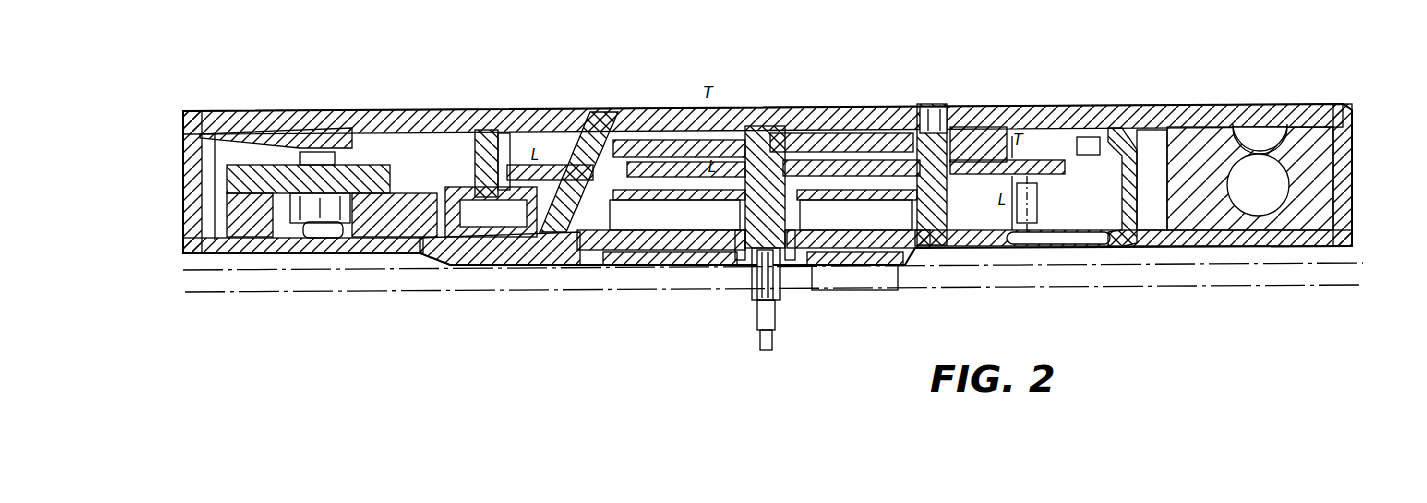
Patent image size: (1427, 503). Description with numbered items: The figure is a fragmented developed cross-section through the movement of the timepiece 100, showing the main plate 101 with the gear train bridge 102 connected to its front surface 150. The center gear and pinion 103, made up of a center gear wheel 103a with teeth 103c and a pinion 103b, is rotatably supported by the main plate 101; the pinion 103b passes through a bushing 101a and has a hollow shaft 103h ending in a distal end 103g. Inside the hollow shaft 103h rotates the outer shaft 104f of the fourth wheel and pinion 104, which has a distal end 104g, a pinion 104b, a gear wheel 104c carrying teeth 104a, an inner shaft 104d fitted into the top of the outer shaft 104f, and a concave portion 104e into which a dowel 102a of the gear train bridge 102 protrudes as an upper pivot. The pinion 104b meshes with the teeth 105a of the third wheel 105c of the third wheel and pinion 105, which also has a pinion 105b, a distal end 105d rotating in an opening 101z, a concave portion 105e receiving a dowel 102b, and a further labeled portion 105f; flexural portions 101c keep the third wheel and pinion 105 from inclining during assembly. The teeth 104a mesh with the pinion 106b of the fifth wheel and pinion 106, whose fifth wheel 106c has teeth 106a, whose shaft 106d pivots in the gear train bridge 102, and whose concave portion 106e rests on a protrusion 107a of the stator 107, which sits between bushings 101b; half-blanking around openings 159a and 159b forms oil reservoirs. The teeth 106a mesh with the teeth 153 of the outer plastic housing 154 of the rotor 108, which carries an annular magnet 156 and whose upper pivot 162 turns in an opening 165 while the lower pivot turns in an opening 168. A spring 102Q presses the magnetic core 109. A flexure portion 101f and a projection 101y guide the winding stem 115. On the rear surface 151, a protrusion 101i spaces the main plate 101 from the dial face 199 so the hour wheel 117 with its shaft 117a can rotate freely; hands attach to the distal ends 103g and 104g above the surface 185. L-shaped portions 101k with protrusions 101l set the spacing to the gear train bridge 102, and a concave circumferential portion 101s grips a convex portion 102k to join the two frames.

The timepiece 100 is at (265, 355).
The main plate 101 is at (370, 265).
The bushing 101a is at (797, 270).
The bushings 101b is at (300, 265).
The flexural portions 101c is at (1040, 210).
The flexure portion 101f is at (1330, 200).
The protrusion 101i is at (575, 265).
The L-shaped portions 101k is at (1158, 108).
The protrusion 101l is at (1098, 108).
The concave circumferential portion 101s is at (1250, 125).
The projection 101y is at (1262, 250).
The opening 101z is at (922, 265).
The gear train bridge 102 is at (688, 107).
The spring 102Q is at (320, 145).
The dowel 102a is at (770, 108).
The dowel 102b is at (938, 108).
The convex portion 102k is at (1296, 106).
The center gear and pinion 103 is at (740, 270).
The center gear wheel 103a is at (661, 227).
The pinion 103b is at (718, 266).
The teeth 103c is at (858, 225).
The distal end 103g is at (770, 325).
The hollow shaft 103h is at (790, 320).
The fourth wheel and pinion 104 is at (815, 108).
The teeth 104a is at (893, 108).
The pinion 104b is at (738, 108).
The gear wheel 104c is at (862, 108).
The inner shaft 104d is at (857, 210).
The concave portion 104e is at (797, 108).
The outer shaft 104f is at (795, 290).
The distal end 104g is at (790, 340).
The third wheel and pinion 105 is at (975, 108).
The teeth 105a is at (1060, 176).
The pinion 105b is at (955, 262).
The third wheel 105c is at (1066, 144).
The distal end 105d is at (935, 262).
The concave portion 105e is at (855, 271).
The seal portion 105f is at (1000, 252).
The fifth wheel and pinion 106 is at (650, 108).
The teeth 106a is at (670, 269).
The pinion 106b is at (545, 108).
The fifth wheel 106c is at (525, 110).
The shaft 106d is at (595, 110).
The concave portion 106e is at (626, 108).
The stator 107 is at (395, 265).
The protrusion 107a is at (677, 210).
The rotor 108 is at (450, 110).
The magnetic core 109 is at (283, 172).
The winding stem 115 is at (1278, 180).
The hour wheel 117 is at (686, 263).
The shaft 117a is at (745, 300).
The front surface 150 is at (625, 266).
The rear surface 151 is at (525, 265).
The teeth 153 is at (475, 160).
The outer plastic housing 154 is at (455, 265).
The annular magnet 156 is at (452, 190).
The opening 159a is at (600, 108).
The opening 159b is at (760, 108).
The upper pivot 162 is at (478, 118).
The opening 165 is at (497, 107).
The opening 168 is at (1320, 250).
The surface 185 is at (1330, 288).
The dial face 199 is at (1208, 278).